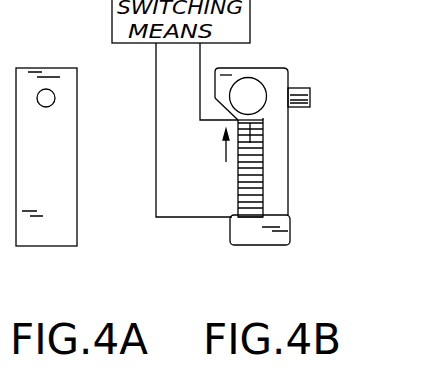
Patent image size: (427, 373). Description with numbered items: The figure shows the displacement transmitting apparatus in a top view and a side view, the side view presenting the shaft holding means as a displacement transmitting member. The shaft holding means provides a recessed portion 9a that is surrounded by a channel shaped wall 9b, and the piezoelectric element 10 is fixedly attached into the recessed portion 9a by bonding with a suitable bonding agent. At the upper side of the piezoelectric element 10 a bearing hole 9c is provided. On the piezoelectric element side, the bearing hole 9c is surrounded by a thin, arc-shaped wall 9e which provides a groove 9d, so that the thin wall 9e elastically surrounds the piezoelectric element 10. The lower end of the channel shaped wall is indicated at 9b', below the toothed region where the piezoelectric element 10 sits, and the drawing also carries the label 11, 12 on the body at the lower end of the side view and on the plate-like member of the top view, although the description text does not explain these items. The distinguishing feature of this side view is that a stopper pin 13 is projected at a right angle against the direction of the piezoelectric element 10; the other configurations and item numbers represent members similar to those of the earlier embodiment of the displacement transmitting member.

In FIG. 4B, the recessed portion 9a is at (262, 168).
In FIG. 4B, the channel shaped wall 9b is at (290, 141).
In FIG. 4B, the lower end of plunger guide 9b' is at (221, 202).
In FIG. 4B, the bearing hole 9c is at (249, 92).
In FIG. 4B, the groove 9d is at (263, 118).
In FIG. 4B, the thin arc-shaped wall 9e is at (222, 107).
In FIG. 4B, the piezoelectric element 10 is at (242, 177).
In FIG. 4A, the switch actuating member 11 is at (80, 167).
In FIG. 4B, the switch actuating member 11 is at (280, 243).
In FIG. 4A, the switch actuating member housing 12 is at (77, 244).
In FIG. 4B, the switch actuating member housing 12 is at (258, 237).
In FIG. 4B, the stopper pin 13 is at (302, 92).